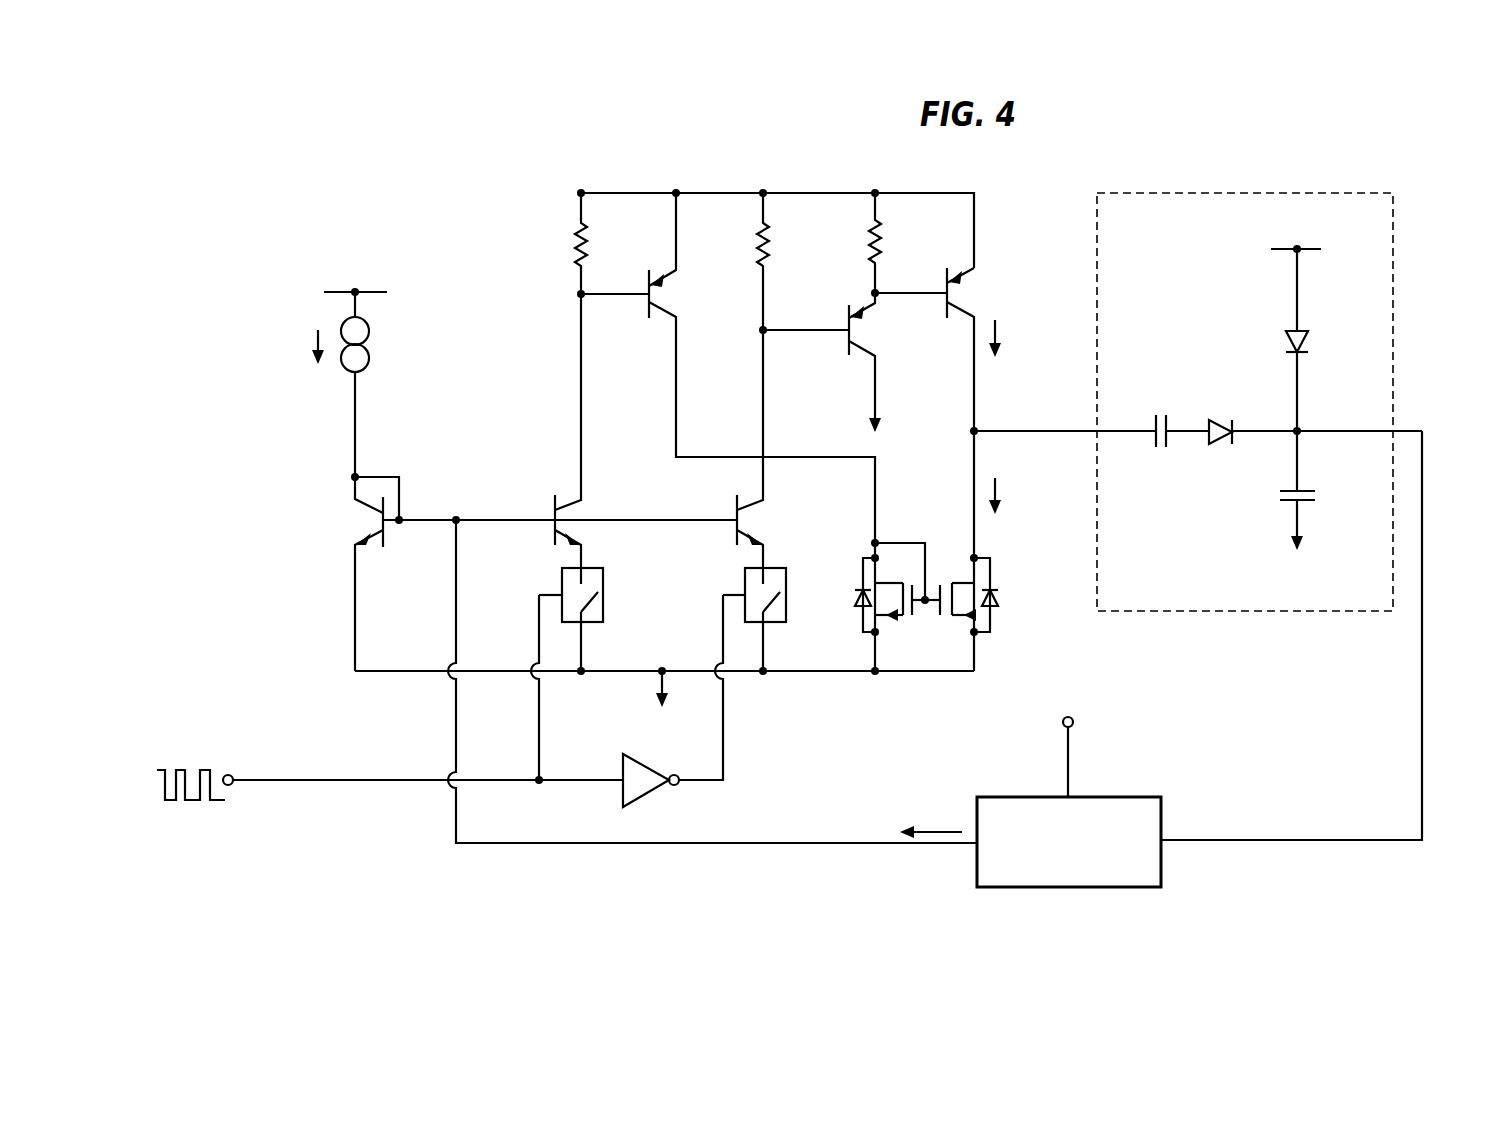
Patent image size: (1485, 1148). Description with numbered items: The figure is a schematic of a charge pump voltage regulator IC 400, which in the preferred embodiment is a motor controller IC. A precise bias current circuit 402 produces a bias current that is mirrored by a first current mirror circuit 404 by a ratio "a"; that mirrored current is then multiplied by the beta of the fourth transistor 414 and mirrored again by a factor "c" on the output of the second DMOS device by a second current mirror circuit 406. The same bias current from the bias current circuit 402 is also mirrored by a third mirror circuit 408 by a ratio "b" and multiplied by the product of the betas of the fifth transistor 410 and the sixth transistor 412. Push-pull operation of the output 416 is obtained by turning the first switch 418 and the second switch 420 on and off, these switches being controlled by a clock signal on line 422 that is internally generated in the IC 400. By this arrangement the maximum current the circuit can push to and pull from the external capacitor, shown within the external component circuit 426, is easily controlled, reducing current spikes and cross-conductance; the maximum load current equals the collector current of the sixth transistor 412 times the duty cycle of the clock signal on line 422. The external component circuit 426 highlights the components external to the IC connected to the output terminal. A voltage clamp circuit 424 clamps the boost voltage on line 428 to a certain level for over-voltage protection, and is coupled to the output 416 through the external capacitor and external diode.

The charge pump voltage regulator IC 400 is at (456, 948).
The bias current circuit 402 is at (371, 349).
The first current mirror circuit 404 is at (470, 522).
The second current mirror circuit 406 is at (975, 592).
The third mirror circuit 408 is at (630, 522).
The transistor Q5 410 is at (897, 350).
The transistor Q6 412 is at (982, 268).
The transistor Q4 414 is at (697, 318).
The output 416 is at (1066, 430).
The switch SW1 418 is at (590, 622).
The switch SW2 420 is at (773, 622).
The clock signal line 422 is at (248, 782).
The voltage clamp circuit 424 is at (1090, 888).
The external component circuit 426 is at (1395, 290).
The V_boost line 428 is at (1424, 640).